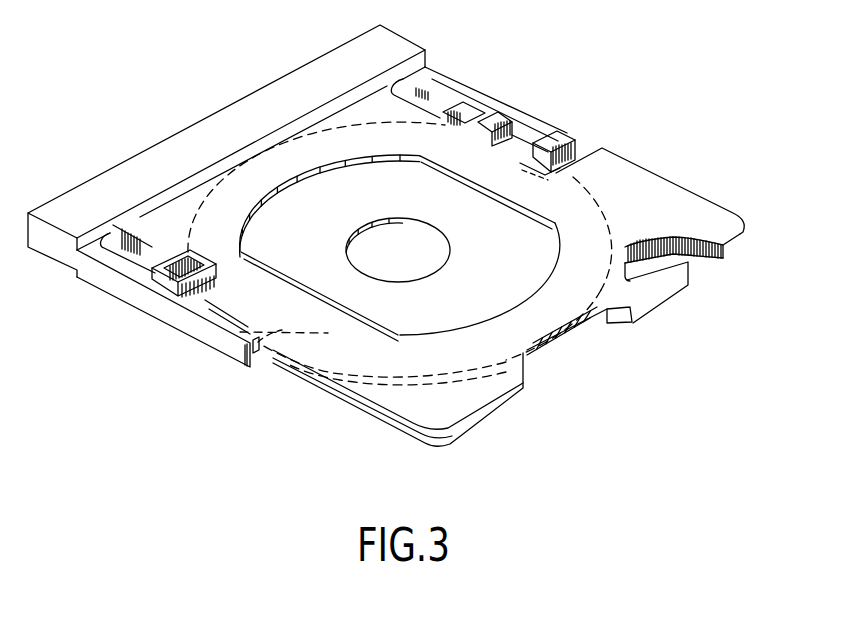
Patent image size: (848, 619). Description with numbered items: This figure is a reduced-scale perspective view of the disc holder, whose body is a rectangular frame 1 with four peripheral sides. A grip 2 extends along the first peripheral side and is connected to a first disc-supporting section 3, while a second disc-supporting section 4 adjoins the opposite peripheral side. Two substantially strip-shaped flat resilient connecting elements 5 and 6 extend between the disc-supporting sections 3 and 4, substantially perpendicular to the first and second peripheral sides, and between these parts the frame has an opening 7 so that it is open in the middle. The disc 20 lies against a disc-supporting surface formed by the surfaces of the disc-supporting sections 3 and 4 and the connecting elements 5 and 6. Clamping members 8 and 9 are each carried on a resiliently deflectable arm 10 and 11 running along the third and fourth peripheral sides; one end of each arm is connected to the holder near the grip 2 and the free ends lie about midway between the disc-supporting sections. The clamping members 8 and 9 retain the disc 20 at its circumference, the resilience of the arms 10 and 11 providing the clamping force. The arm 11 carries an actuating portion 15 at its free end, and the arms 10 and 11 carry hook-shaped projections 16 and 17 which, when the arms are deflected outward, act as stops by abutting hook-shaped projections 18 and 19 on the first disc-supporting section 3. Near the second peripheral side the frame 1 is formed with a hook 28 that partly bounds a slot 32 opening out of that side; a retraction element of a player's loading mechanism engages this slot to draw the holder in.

The rectangular frame 1 is at (320, 418).
The grip 2 is at (203, 137).
The first disc-supporting section 3 is at (338, 145).
The second disc-supporting section 4 is at (592, 235).
The connecting element 5 is at (295, 293).
The connecting element 6 is at (510, 183).
The opening 7 is at (533, 230).
The clamping member 8 is at (291, 335).
The clamping member 9 is at (543, 137).
The resiliently deflectable arm 10 is at (233, 350).
The resiliently deflectable arm 11 is at (517, 115).
The actuating portion 15 is at (563, 137).
The hook-shaped projection 16 is at (243, 252).
The hook-shaped projection 17 is at (483, 125).
The hook-shaped projection 18 is at (243, 252).
The hook-shaped projection 19 is at (468, 110).
The disc 20 is at (243, 308).
The hook 28 is at (682, 262).
The slot 32 is at (637, 268).